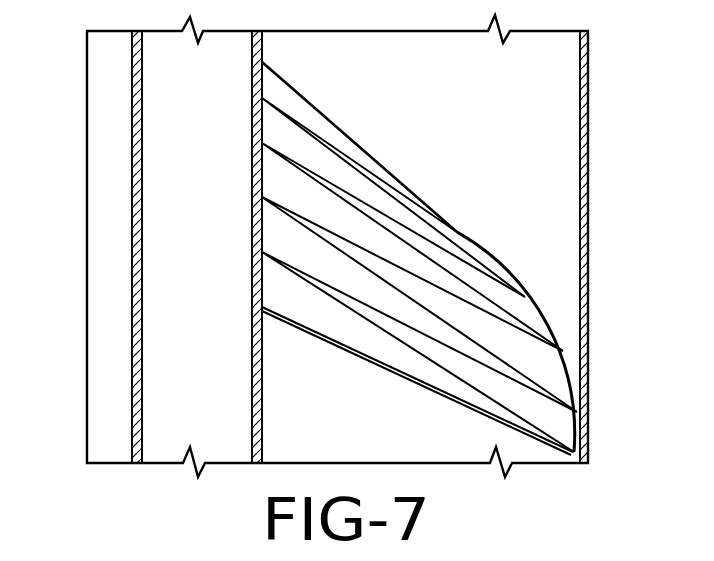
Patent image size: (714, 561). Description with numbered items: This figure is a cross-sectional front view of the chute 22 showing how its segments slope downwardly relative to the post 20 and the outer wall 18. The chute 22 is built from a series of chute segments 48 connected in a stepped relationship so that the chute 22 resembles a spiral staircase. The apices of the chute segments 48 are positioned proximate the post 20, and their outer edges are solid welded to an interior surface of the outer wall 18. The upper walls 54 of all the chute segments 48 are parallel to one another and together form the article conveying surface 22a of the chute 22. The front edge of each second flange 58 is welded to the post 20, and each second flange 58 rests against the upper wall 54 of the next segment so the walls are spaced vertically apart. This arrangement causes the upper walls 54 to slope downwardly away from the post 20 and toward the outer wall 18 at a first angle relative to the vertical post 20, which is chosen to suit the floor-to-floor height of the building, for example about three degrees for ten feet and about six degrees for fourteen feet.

The outer wall 18 is at (598, 168).
The post 20 is at (126, 390).
The chute 22 is at (442, 203).
The article conveying surface 22a is at (306, 101).
The chute segments 48 is at (482, 240).
The upper walls 54 is at (481, 258).
The second flange 58 is at (281, 131).